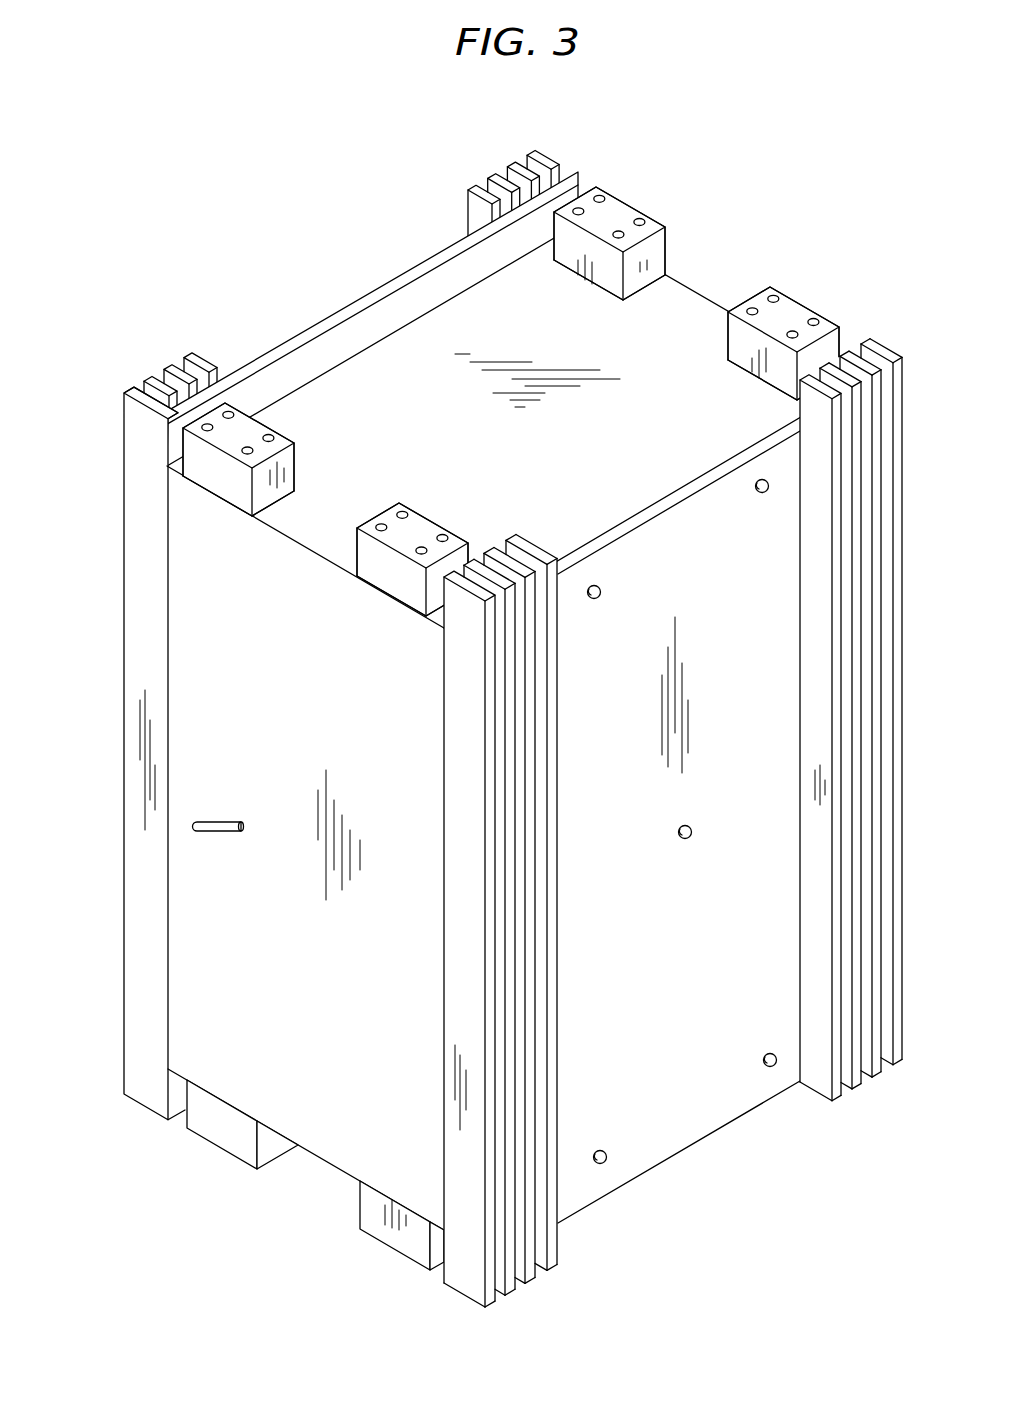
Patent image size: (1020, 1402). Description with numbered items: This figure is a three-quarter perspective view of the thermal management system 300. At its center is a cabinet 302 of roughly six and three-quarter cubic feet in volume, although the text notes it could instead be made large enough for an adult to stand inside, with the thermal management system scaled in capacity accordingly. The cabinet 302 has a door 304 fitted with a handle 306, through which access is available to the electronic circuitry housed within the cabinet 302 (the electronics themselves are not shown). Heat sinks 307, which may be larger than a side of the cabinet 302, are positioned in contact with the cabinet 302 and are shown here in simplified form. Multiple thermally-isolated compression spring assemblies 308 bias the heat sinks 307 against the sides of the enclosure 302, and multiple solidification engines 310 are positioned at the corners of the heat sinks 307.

The thermal management system 300 is at (199, 262).
The cabinet 302 is at (416, 360).
The door 304 is at (215, 865).
The handle 306 is at (221, 820).
The heat sinks 307 is at (124, 508).
The thermally-isolated compression spring assemblies 308 is at (756, 484).
The solidification engines 310 is at (618, 214).